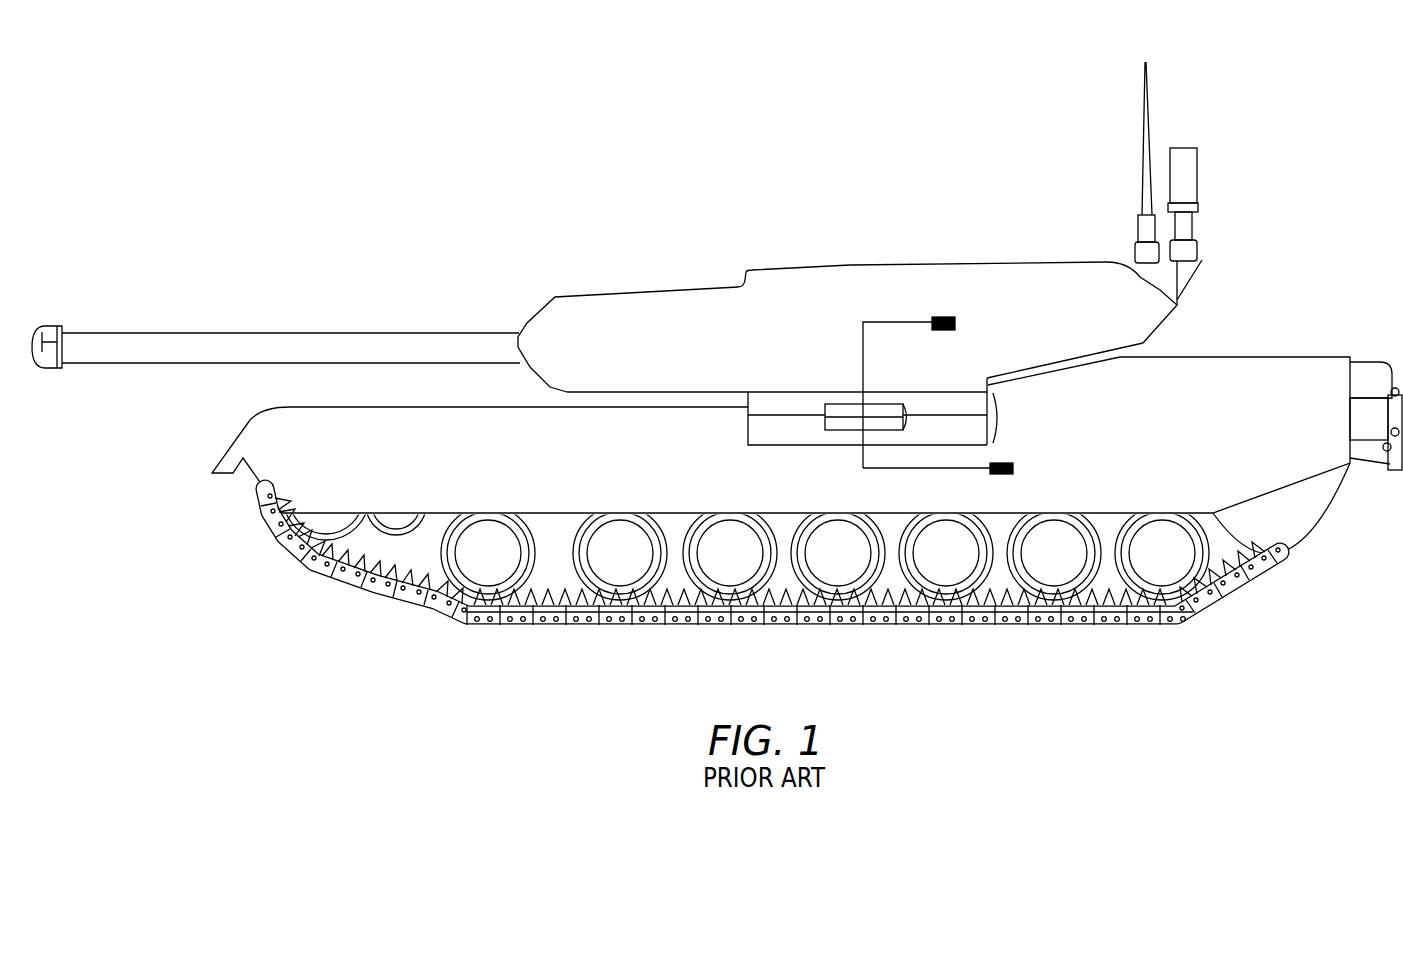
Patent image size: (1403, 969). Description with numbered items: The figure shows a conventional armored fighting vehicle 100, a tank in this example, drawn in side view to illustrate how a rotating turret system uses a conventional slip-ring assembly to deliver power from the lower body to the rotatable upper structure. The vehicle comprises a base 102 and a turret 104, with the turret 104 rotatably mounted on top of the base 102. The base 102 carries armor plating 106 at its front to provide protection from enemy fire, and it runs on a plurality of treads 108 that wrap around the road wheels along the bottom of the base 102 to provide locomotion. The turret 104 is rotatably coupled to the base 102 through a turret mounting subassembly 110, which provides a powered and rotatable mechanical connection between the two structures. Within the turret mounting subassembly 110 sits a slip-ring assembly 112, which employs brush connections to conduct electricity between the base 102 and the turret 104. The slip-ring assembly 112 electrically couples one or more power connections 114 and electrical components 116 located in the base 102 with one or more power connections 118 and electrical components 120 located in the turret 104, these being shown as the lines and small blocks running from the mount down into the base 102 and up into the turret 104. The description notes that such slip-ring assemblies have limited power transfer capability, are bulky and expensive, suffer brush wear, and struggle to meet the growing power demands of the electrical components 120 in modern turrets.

The armored fighting vehicle 100 is at (433, 100).
The base 102 is at (263, 430).
The turret 104 is at (578, 305).
The armor plating 106 is at (280, 468).
The treads 108 is at (449, 612).
The turret mounting subassembly 110 is at (997, 418).
The slip-ring assembly 112 is at (905, 420).
The power connections 114 is at (945, 468).
The electrical components 116 is at (1013, 468).
The power connections 118 is at (863, 365).
The electrical components 120 is at (948, 316).